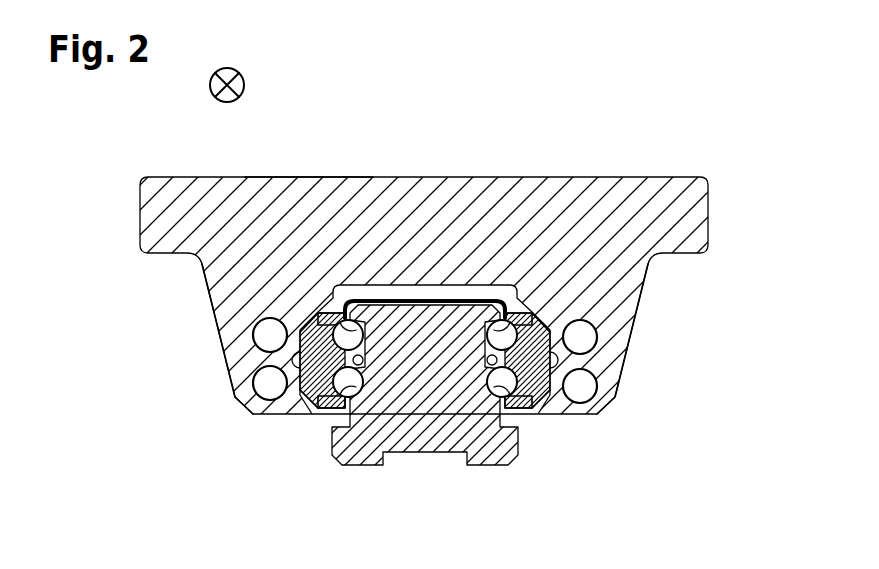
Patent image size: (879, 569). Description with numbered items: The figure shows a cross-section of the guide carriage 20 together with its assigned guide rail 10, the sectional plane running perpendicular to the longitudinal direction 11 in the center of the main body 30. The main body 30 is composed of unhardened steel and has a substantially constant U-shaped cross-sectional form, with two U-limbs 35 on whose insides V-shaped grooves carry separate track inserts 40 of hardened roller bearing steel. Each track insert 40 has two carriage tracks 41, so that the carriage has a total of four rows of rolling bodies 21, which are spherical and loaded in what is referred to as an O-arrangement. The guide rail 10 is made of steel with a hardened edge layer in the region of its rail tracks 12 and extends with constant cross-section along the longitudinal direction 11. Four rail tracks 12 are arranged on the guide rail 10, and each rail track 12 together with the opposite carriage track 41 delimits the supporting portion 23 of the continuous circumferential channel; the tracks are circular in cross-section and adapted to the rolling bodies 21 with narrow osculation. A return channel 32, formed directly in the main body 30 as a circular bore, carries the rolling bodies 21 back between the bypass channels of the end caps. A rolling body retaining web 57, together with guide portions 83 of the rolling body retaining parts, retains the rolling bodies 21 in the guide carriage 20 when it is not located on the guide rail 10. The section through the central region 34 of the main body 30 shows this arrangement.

The guide rail 10 is at (427, 420).
The longitudinal direction 11 is at (244, 84).
The rail track 12 is at (345, 322).
The guide carriage 20 is at (556, 213).
The rolling body 21 is at (553, 350).
The supporting portion 23 is at (425, 360).
The main body 30 is at (424, 295).
The return channel 32 is at (270, 335).
The central section 34 is at (421, 215).
The U-limb 35 is at (250, 367).
The track insert 40 is at (603, 325).
The carriage track 41 is at (322, 308).
The rolling body retaining web 57 is at (363, 300).
The guide portion 83 is at (327, 308).